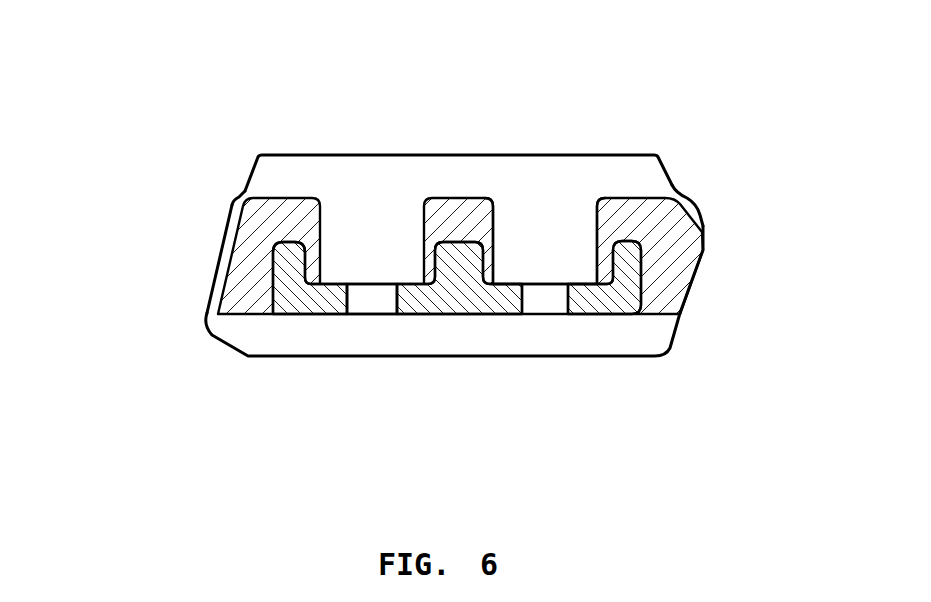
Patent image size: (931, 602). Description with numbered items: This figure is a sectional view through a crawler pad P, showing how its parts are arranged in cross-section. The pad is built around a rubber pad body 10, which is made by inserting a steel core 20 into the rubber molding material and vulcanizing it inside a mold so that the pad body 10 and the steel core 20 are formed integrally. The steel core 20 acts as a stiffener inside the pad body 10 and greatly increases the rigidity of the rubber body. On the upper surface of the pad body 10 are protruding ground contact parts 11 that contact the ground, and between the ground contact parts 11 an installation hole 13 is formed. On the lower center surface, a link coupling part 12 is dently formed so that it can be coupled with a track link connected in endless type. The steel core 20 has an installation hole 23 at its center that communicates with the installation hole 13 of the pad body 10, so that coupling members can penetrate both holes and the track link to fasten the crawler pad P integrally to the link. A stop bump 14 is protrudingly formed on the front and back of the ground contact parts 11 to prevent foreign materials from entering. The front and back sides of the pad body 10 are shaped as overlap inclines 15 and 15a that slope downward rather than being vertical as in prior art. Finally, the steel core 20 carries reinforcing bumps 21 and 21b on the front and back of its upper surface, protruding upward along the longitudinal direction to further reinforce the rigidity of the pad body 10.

The pad body 10 is at (448, 223).
The ground contact part 11 is at (308, 153).
The link coupling part 12 is at (582, 335).
The installation hole 13 is at (540, 225).
The stop bump 14 is at (238, 195).
The overlap incline 15 is at (692, 288).
The overlap incline 15a is at (219, 281).
The steel core 20 is at (453, 298).
The reinforcing bump 21 is at (633, 255).
The reinforcing bump 21b is at (288, 257).
The installation hole 23 is at (370, 302).
The crawler pad P is at (388, 98).